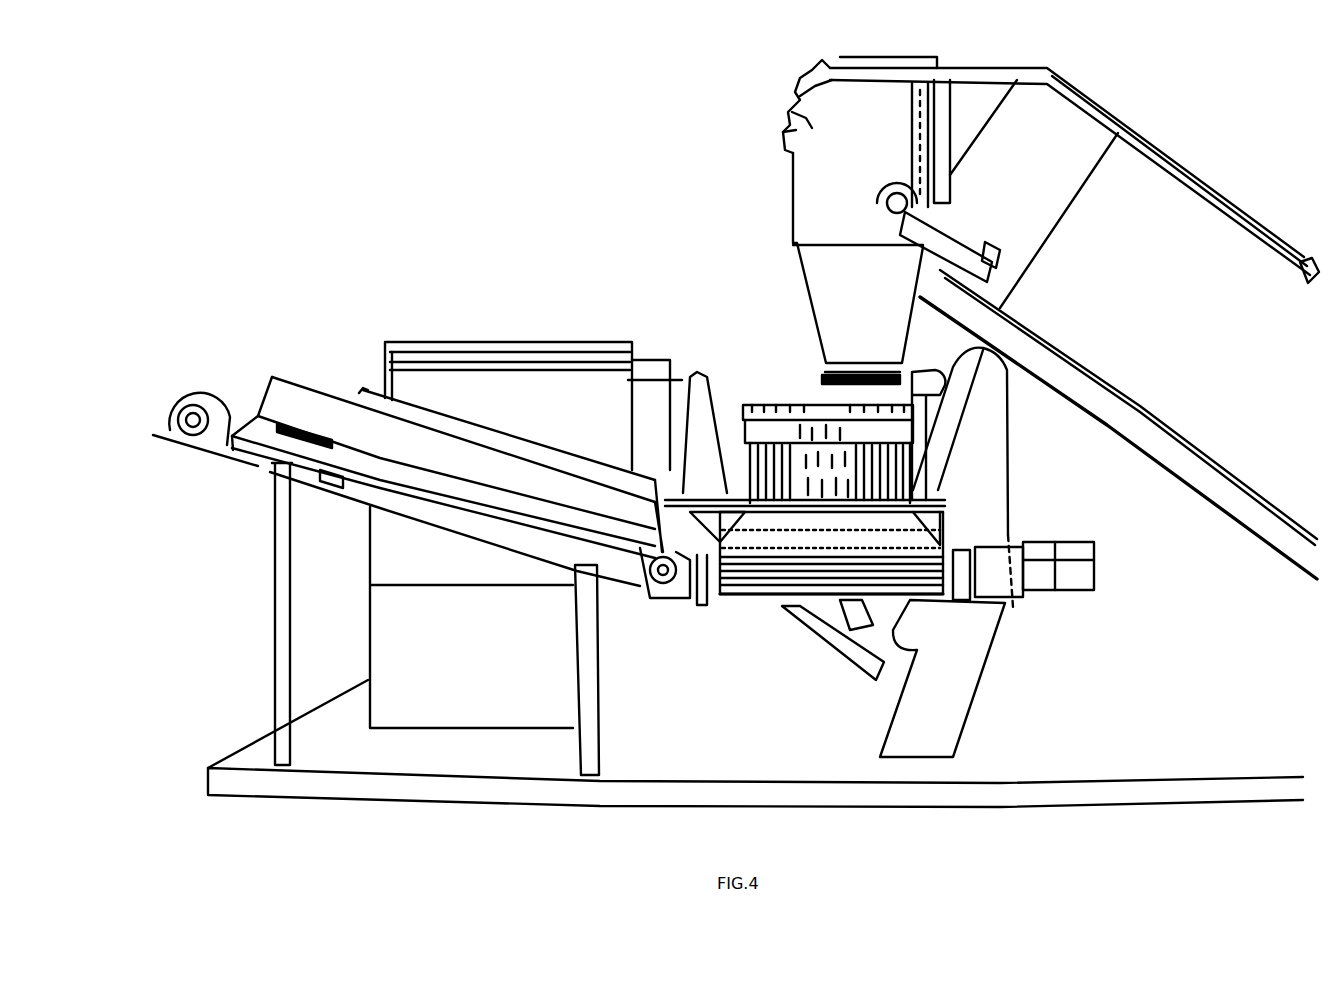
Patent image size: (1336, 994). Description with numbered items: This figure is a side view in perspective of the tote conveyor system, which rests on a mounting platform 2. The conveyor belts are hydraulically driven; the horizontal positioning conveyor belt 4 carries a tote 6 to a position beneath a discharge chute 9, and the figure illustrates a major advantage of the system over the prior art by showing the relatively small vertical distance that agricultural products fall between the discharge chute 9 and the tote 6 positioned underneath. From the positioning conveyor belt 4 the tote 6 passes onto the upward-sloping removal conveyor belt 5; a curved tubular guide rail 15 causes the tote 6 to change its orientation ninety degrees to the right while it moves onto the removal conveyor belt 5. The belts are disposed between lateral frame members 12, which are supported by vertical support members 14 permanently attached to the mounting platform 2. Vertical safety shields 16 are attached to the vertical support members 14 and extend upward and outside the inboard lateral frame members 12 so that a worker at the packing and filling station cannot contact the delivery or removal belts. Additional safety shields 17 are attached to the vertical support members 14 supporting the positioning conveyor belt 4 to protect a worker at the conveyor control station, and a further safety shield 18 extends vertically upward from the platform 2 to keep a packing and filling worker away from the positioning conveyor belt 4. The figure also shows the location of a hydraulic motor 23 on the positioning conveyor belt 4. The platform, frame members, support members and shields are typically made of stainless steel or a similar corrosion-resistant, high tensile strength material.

The mounting platform 2 is at (208, 795).
The positioning conveyor belt 4 is at (813, 573).
The removal conveyor belt 5 is at (238, 405).
The tote 6 is at (783, 408).
The discharge chute 9 is at (880, 98).
The lateral frame member 12 is at (311, 388).
The vertical support member 14 is at (587, 753).
The tubular guide rail 15 is at (770, 503).
The vertical safety shield 16 is at (453, 363).
The safety shield 17 is at (980, 455).
The safety shield 18 is at (695, 390).
The hydraulic motor 23 is at (1061, 565).